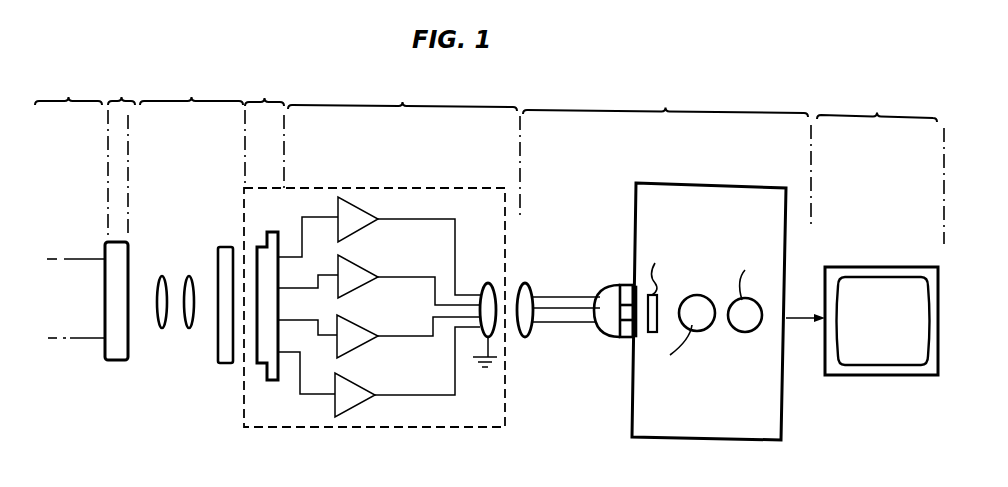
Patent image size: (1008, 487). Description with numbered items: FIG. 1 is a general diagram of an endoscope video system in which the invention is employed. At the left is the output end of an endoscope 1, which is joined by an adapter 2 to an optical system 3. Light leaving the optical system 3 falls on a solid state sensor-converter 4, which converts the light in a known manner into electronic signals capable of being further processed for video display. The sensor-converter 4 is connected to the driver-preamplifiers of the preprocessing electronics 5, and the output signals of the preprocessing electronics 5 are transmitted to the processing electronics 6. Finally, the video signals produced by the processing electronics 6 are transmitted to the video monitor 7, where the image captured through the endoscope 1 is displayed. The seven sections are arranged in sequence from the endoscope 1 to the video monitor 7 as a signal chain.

The endoscope 1 is at (76, 207).
The adapter 2 is at (116, 218).
The optical system 3 is at (195, 221).
The solid state sensor-converter 4 is at (267, 229).
The preprocessing electronics 5 is at (374, 256).
The processing electronics 6 is at (651, 264).
The video monitor 7 is at (862, 235).